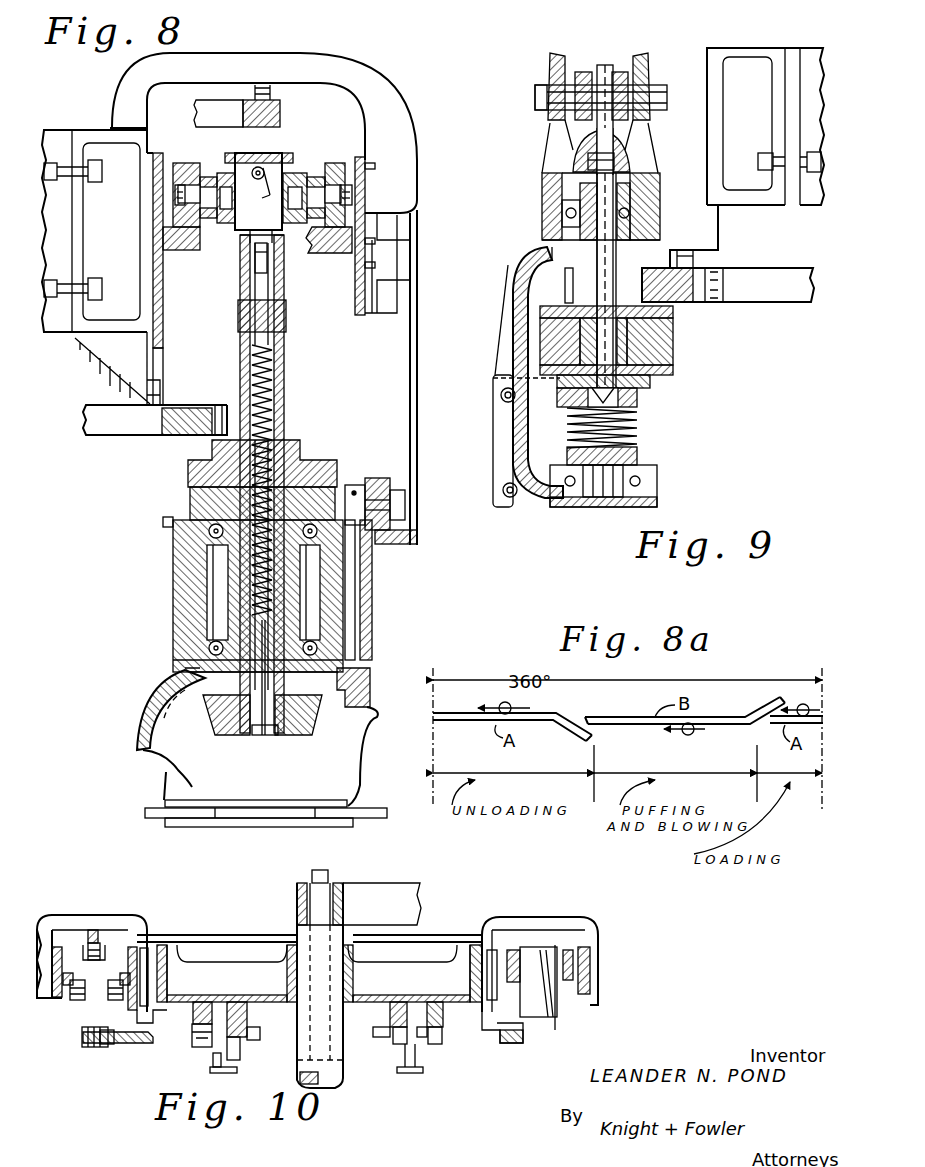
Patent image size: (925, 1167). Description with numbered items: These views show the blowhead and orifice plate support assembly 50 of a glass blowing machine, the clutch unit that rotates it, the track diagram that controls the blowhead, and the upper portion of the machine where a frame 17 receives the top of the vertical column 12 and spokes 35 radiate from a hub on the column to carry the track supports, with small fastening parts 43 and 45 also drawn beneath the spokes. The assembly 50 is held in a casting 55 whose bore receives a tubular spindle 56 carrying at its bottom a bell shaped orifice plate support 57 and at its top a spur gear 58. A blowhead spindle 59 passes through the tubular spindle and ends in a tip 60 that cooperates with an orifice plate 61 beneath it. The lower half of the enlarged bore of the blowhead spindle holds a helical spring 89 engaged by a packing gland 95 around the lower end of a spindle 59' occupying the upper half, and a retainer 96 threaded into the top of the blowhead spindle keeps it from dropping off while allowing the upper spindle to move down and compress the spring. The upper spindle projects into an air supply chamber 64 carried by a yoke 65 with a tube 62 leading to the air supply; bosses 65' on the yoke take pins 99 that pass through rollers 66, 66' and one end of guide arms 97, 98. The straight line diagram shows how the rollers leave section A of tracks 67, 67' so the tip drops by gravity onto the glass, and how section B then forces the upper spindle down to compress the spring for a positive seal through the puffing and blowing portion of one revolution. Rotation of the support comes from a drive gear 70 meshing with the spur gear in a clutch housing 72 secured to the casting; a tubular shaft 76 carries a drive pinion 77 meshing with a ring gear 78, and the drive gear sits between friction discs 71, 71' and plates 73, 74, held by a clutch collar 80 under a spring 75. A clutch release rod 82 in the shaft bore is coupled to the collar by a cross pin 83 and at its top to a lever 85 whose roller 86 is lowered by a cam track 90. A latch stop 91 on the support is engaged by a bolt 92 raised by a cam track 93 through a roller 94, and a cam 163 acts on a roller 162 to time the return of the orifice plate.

In FIG. 10, the vertical column 12 is at (300, 1075).
In FIG. 10, the frame 17 is at (367, 908).
In FIG. 8, the spokes 35 is at (70, 340).
In FIG. 9, the spokes 35 is at (797, 55).
In FIG. 10, the spokes 35 is at (170, 955).
In FIG. 10, the screw 43 is at (237, 1067).
In FIG. 10, the nut 45 is at (250, 1030).
In FIG. 8, the combined blowhead and orifice plate support assembly 50 is at (165, 690).
In FIG. 8, the casting 55 is at (173, 523).
In FIG. 8, the tubular spindle 56 is at (210, 575).
In FIG. 8, the orifice plate support 57 is at (342, 775).
In FIG. 8, the spur gear 58 is at (322, 460).
In FIG. 8, the blowhead spindle 59 is at (241, 482).
In FIG. 8, the spindle 59' is at (241, 260).
In FIG. 8, the blowhead tip 60 is at (308, 735).
In FIG. 8, the orifice plate 61 is at (145, 813).
In FIG. 8, the tube 62 is at (262, 168).
In FIG. 8, the air supply chamber 64 is at (272, 193).
In FIG. 8, the yoke 65 is at (236, 175).
In FIG. 8, the bosses 65' is at (274, 183).
In FIG. 8, the supporting and controlling roller 66 is at (186, 179).
In FIG. 10, the supporting and controlling roller 66 is at (532, 962).
In FIG. 8, the supporting and controlling roller 66' is at (343, 175).
In FIG. 10, the supporting and controlling roller 66' is at (583, 937).
In FIG. 8, the supporting track 67 is at (328, 262).
In FIG. 10, the supporting track 67 is at (310, 1005).
In FIG. 8, the supporting track 67' is at (183, 260).
In FIG. 10, the supporting track 67' is at (324, 1016).
In FIG. 9, the drive gear 70 is at (675, 342).
In FIG. 9, the friction disc 71 is at (639, 341).
In FIG. 9, the friction disc 71' is at (634, 370).
In FIG. 9, the housing 72 is at (504, 330).
In FIG. 9, the plate 73 is at (675, 312).
In FIG. 9, the plate 74 is at (650, 385).
In FIG. 9, the spring 75 is at (637, 425).
In FIG. 9, the tubular shaft 76 is at (530, 270).
In FIG. 10, the tubular shaft 76 is at (105, 1043).
In FIG. 9, the drive pinion 77 is at (565, 292).
In FIG. 10, the drive pinion 77 is at (85, 1040).
In FIG. 8, the ring gear 78 is at (118, 435).
In FIG. 9, the ring gear 78 is at (735, 278).
In FIG. 10, the ring gear 78 is at (140, 1040).
In FIG. 9, the clutch collar 80 is at (638, 402).
In FIG. 9, the clutch release rod 82 is at (560, 185).
In FIG. 9, the cross pin 83 is at (500, 378).
In FIG. 9, the lever 85 is at (552, 70).
In FIG. 10, the lever 85 is at (105, 950).
In FIG. 10, the roller 86 is at (95, 945).
In FIG. 8, the helical spring 89 is at (190, 505).
In FIG. 8, the cam track 90 is at (205, 108).
In FIG. 10, the cam track 90 is at (92, 930).
In FIG. 8, the stop 91 is at (362, 685).
In FIG. 8, the bolt 92 is at (357, 600).
In FIG. 8, the cam track 93 is at (395, 545).
In FIG. 8, the roller 94 is at (382, 478).
In FIG. 8, the packing gland 95 is at (268, 410).
In FIG. 8, the retainer 96 is at (238, 305).
In FIG. 8, the guide arm 97 is at (205, 178).
In FIG. 8, the guide arm 98 is at (305, 228).
In FIG. 8, the pins 99 is at (180, 192).
In FIG. 10, the roller 162 is at (193, 1040).
In FIG. 10, the cam 163 is at (193, 1010).